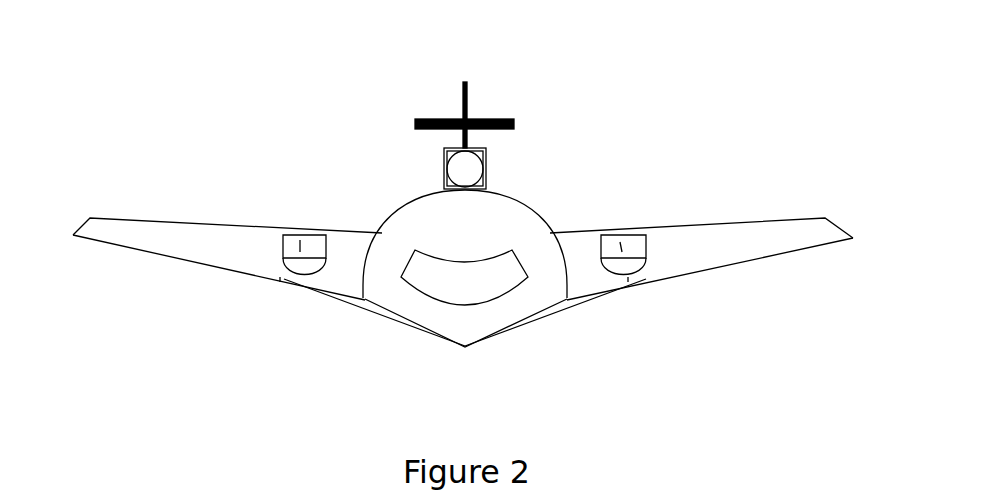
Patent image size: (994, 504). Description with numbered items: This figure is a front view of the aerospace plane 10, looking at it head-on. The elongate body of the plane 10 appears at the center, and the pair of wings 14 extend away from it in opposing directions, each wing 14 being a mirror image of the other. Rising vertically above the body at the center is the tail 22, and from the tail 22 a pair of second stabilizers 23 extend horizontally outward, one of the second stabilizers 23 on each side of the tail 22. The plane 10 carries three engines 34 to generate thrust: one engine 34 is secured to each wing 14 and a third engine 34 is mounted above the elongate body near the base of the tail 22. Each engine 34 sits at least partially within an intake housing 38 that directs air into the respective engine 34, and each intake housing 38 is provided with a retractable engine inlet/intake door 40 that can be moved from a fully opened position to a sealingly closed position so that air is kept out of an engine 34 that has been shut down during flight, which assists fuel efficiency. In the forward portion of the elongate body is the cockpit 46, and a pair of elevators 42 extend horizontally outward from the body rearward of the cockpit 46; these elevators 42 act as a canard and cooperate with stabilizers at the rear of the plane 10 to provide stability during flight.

The aerospace plane 10 is at (758, 63).
The wings 14 is at (103, 216).
The tail 22 is at (468, 97).
The second stabilizers 23 is at (418, 118).
The engine 34 is at (470, 169).
The intake housing 38 is at (444, 152).
The retractable engine inlet/intake door 40 is at (278, 278).
The elevators 42 is at (372, 308).
The cockpit 46 is at (435, 289).